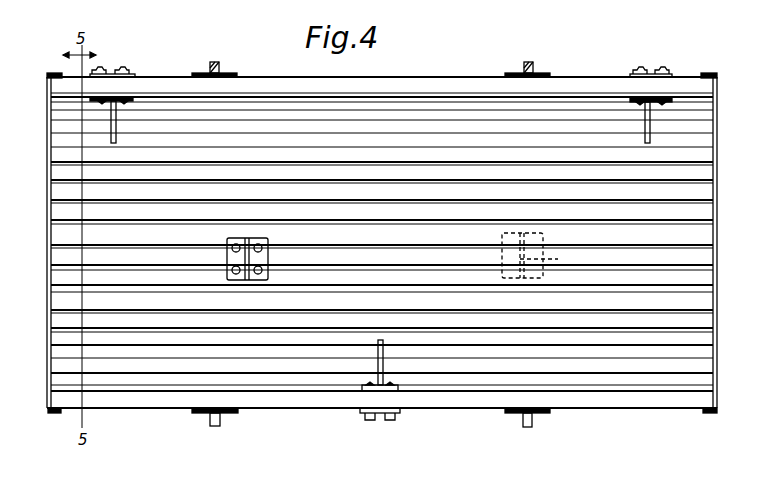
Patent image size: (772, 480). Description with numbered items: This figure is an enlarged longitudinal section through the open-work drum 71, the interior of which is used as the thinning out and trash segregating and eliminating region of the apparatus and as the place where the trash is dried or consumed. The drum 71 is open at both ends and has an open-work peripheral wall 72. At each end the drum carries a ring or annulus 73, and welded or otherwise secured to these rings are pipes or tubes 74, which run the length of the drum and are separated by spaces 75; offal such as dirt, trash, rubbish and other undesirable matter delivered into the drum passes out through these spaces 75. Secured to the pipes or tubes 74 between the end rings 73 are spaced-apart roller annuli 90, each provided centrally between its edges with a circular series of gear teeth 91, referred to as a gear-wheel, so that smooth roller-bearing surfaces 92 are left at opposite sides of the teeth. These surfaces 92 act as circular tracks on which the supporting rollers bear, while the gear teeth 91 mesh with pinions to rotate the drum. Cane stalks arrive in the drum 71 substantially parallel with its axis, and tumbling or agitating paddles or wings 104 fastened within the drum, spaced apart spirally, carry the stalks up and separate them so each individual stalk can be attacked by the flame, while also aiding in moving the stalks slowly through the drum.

The drum 71 is at (462, 78).
The open-work peripheral wall 72 is at (697, 238).
The ring or annulus 73 is at (52, 414).
The pipes or tubes 74 is at (58, 283).
The spaces 75 is at (455, 182).
The roller annuli 90 is at (197, 413).
The gear teeth 91 is at (221, 422).
The smooth roller-bearing surfaces 92 is at (206, 414).
The tumbling or agitating paddles or wings 104 is at (117, 125).